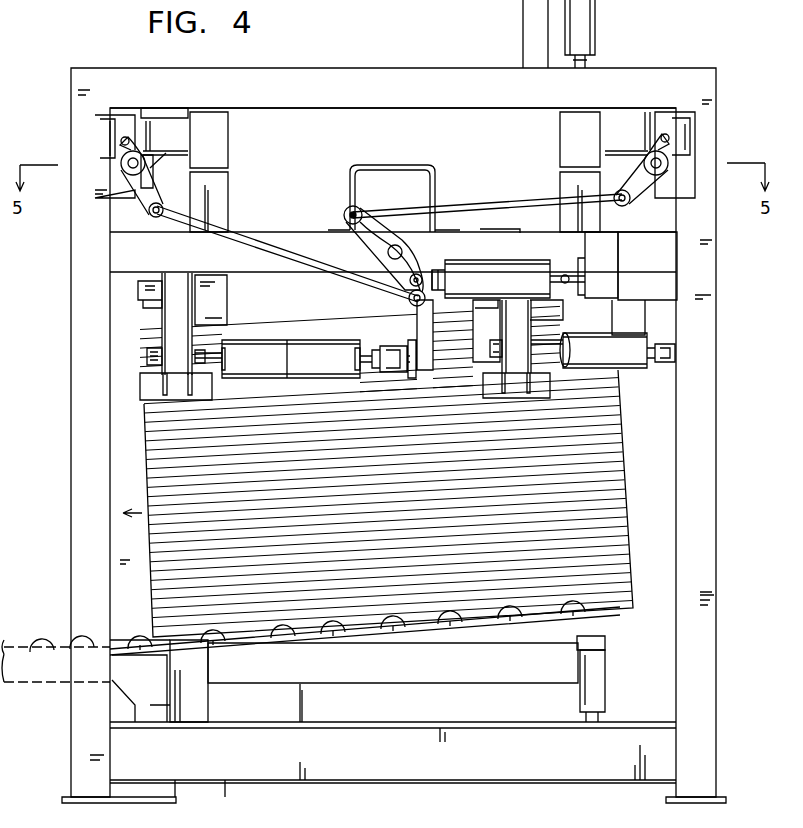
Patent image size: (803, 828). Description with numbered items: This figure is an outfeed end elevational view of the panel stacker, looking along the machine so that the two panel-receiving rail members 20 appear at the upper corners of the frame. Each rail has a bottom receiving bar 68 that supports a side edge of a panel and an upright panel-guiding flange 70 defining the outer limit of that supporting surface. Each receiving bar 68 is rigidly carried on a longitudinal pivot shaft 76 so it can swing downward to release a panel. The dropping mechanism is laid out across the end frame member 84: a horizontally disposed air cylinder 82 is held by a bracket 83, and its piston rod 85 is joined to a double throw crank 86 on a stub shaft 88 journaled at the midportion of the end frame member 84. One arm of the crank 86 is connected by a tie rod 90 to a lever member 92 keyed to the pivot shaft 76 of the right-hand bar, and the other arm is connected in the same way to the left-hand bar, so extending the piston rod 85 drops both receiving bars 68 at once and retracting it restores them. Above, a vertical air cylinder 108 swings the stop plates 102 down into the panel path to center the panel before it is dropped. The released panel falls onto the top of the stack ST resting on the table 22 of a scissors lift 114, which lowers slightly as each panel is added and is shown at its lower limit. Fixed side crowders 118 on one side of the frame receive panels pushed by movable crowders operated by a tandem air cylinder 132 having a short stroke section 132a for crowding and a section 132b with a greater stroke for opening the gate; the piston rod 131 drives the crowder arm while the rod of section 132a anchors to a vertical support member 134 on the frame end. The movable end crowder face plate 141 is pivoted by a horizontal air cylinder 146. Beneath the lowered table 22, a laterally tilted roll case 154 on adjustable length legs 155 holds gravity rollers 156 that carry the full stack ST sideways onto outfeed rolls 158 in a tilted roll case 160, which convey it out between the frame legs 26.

The panel-receiving rail member 20 is at (168, 149).
The table 22 is at (600, 632).
The frame legs 26 is at (71, 452).
The receiving bar 68 is at (150, 160).
The panel-guiding flange 70 is at (143, 128).
The pivot shaft 76 is at (664, 165).
The air cylinder 82 is at (540, 258).
The bracket 83 is at (592, 284).
The end frame member 84 is at (657, 236).
The piston rod 85 is at (438, 268).
The double throw crank 86 is at (408, 296).
The stub shaft 88 is at (402, 252).
The tie rod 90 is at (514, 202).
The lever member 92 is at (644, 185).
The stop plate 102 is at (228, 150).
The vertical air cylinder 108 is at (596, 15).
The scissors lift 114 is at (522, 713).
The fixed side crowder 118 is at (637, 268).
The piston rod 131 is at (212, 350).
The tandem air cylinder 132 is at (300, 326).
The short stroke section 132a is at (342, 337).
The cylinder section 132b is at (258, 338).
The vertical support member 134 is at (440, 300).
The face plate 141 is at (498, 338).
The horizontal air cylinder 146 is at (628, 370).
The roll case 154 is at (605, 650).
The adjustable length legs 155 is at (606, 686).
The gravity rollers 156 is at (521, 624).
The outfeed rolls 158 is at (61, 648).
The roll case 160 is at (60, 680).
The stack ST is at (620, 455).